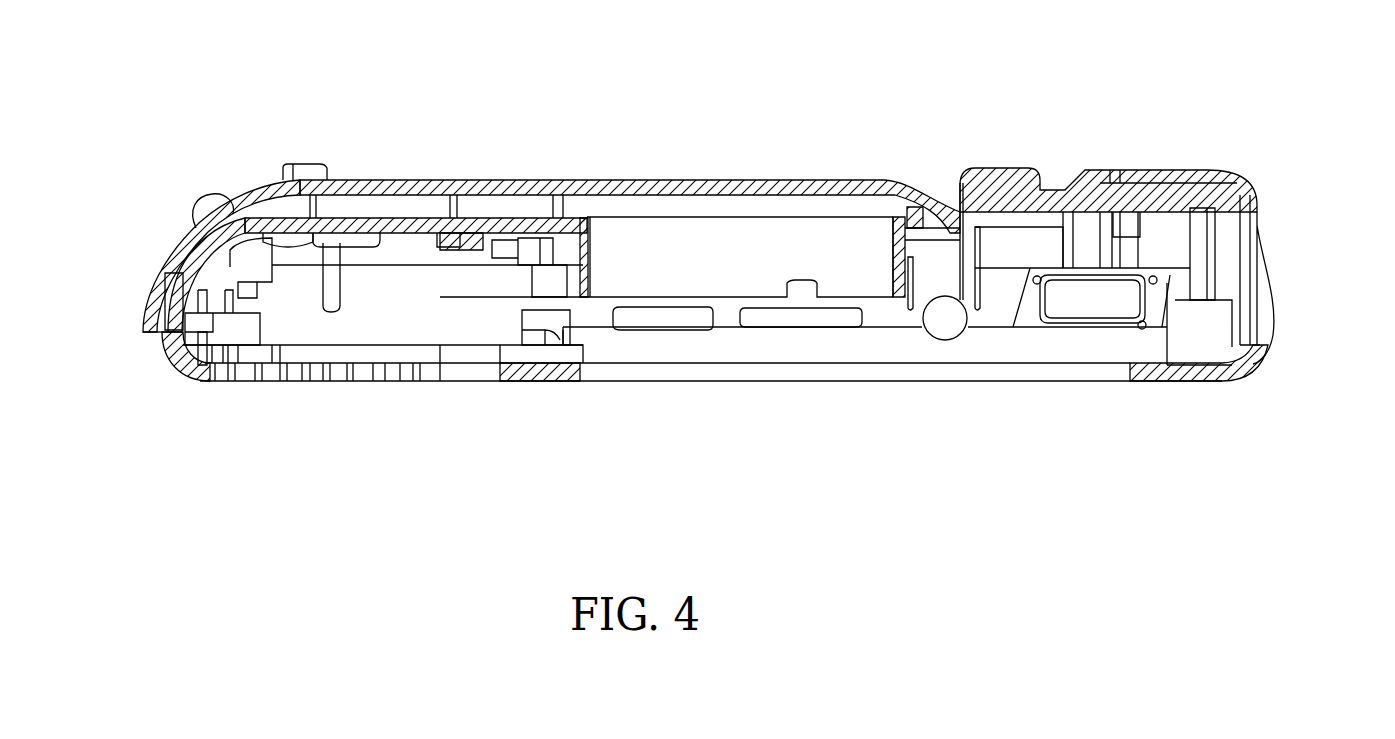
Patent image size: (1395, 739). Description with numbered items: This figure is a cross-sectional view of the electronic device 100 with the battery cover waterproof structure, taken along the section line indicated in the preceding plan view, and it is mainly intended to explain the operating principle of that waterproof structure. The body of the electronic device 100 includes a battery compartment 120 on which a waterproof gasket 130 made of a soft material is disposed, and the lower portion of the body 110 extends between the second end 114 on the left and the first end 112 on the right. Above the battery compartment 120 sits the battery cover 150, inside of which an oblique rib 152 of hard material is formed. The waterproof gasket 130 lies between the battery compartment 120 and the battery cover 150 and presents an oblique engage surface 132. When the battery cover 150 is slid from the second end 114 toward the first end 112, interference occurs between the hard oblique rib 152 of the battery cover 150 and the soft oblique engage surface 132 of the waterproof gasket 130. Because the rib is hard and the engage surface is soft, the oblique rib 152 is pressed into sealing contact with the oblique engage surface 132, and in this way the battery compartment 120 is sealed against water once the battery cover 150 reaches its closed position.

The electronic device 100 is at (93, 58).
The bottom housing 110 is at (386, 312).
The first end 112 is at (1292, 308).
The second end 114 is at (128, 292).
The battery compartment 120 is at (745, 255).
The waterproof gasket 130 is at (583, 285).
The oblique engage surface 132 is at (818, 212).
The battery cover 150 is at (395, 183).
The oblique rib 152 is at (662, 210).